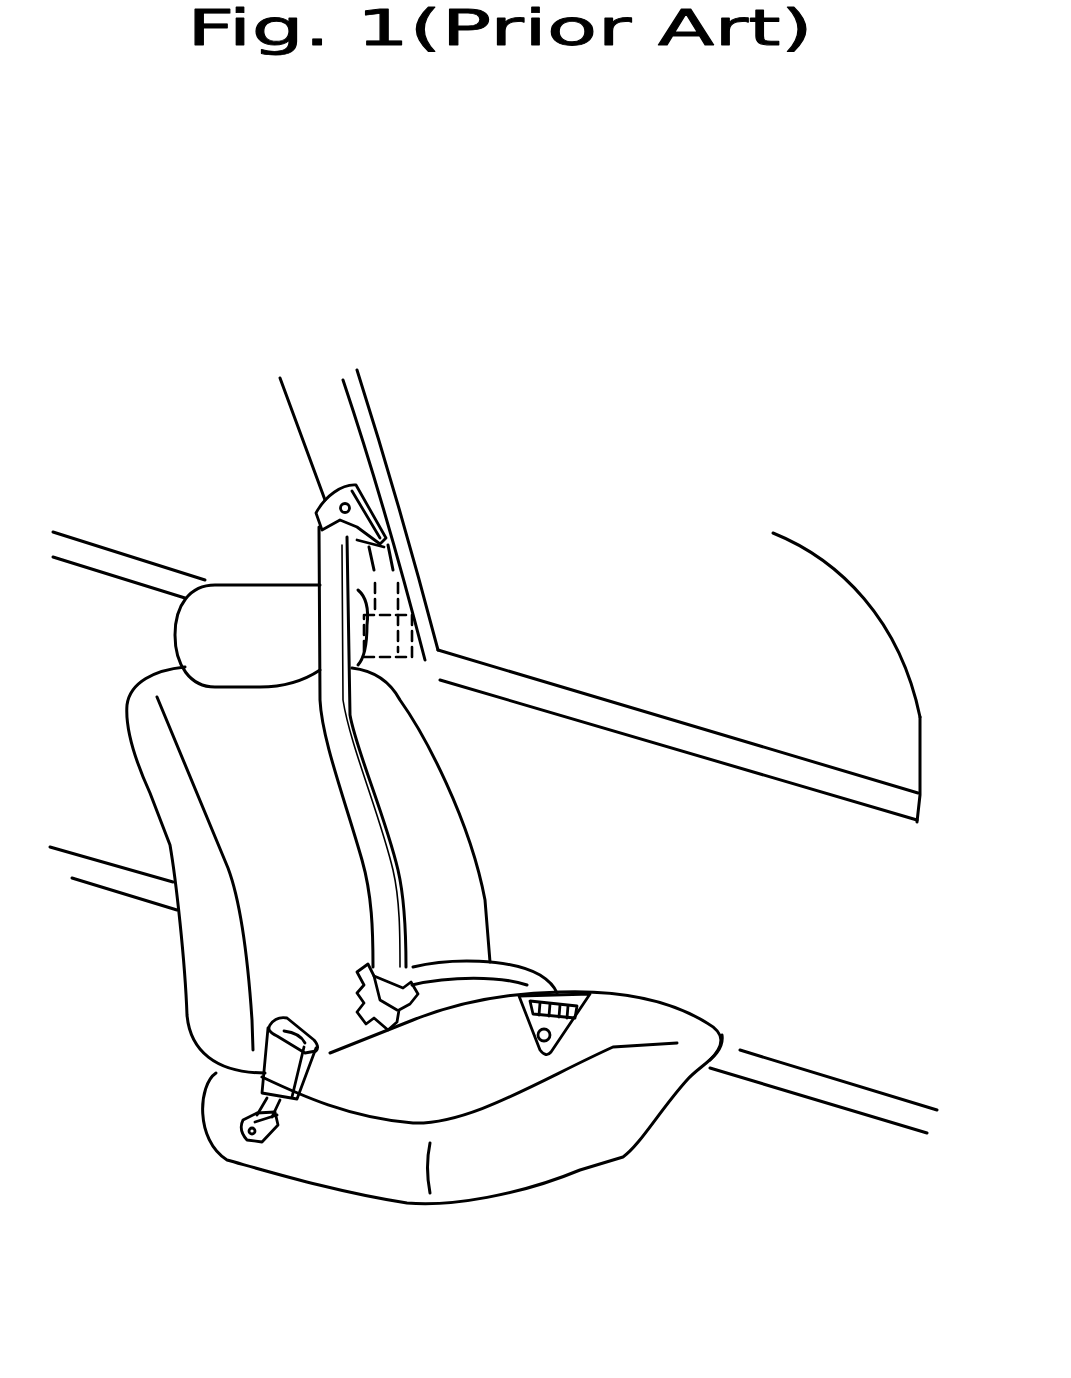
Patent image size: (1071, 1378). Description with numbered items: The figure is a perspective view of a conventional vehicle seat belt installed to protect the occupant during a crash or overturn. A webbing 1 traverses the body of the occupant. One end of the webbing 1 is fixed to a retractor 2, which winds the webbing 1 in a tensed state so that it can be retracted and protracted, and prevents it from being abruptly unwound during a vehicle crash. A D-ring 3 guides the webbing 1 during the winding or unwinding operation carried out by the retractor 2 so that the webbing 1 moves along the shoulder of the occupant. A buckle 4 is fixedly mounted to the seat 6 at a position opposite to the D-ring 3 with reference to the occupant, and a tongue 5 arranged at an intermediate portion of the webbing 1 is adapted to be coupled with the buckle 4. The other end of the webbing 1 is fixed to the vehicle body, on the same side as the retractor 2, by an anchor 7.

The webbing 1 is at (332, 560).
The retractor 2 is at (412, 617).
The D-ring 3 is at (374, 478).
The buckle 4 is at (271, 1079).
The tongue 5 is at (392, 1018).
The seat 6 is at (343, 1135).
The anchor 7 is at (580, 993).